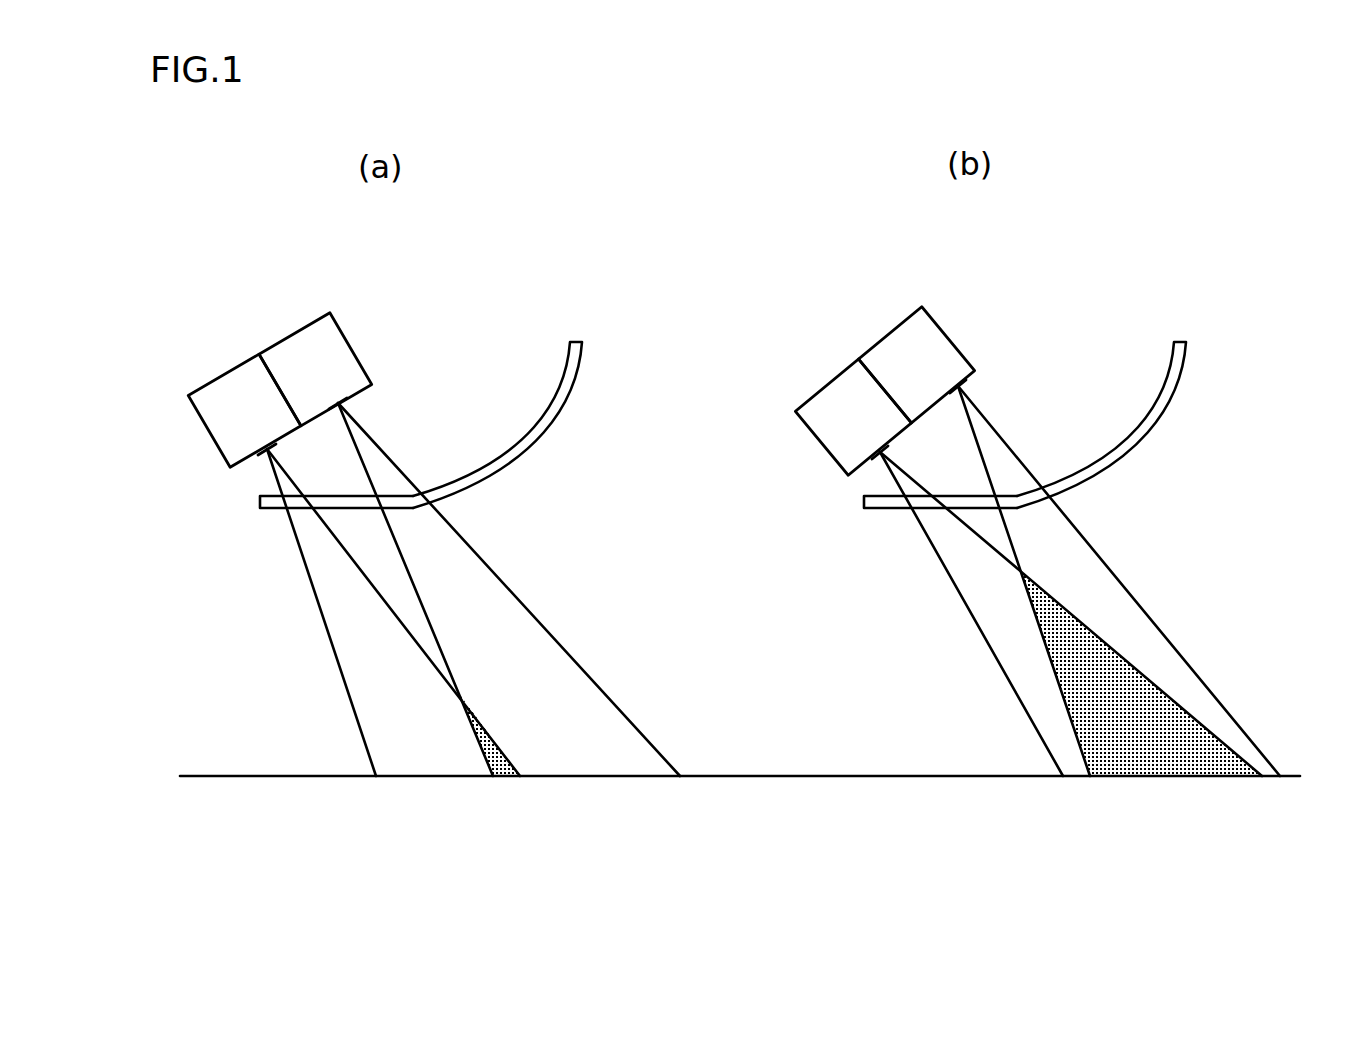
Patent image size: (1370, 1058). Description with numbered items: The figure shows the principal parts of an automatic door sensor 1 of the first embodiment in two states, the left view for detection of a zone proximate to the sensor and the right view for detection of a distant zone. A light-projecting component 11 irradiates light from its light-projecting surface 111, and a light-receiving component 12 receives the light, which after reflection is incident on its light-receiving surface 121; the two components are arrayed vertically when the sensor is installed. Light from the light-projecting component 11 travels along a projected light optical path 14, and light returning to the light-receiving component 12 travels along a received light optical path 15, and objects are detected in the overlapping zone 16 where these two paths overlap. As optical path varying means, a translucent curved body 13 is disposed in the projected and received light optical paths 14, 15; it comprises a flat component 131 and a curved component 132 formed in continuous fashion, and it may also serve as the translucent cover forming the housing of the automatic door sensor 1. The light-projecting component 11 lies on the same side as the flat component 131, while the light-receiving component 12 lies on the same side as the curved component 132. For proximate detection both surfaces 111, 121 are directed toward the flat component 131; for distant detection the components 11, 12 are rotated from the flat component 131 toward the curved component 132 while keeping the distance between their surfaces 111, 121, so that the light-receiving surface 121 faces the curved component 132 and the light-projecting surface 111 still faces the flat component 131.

The automatic door sensor 1 is at (198, 244).
The light-projecting component 11 is at (226, 387).
The light-receiving component 12 is at (302, 345).
The light-projecting surface 111 is at (252, 465).
The light-receiving surface 121 is at (352, 400).
The translucent curved body 13 is at (750, 444).
The flat component 131 is at (346, 503).
The curved component 132 is at (553, 428).
The projected light optical path 14 is at (368, 738).
The received light optical path 15 is at (552, 655).
The overlapping zone 16 is at (485, 742).